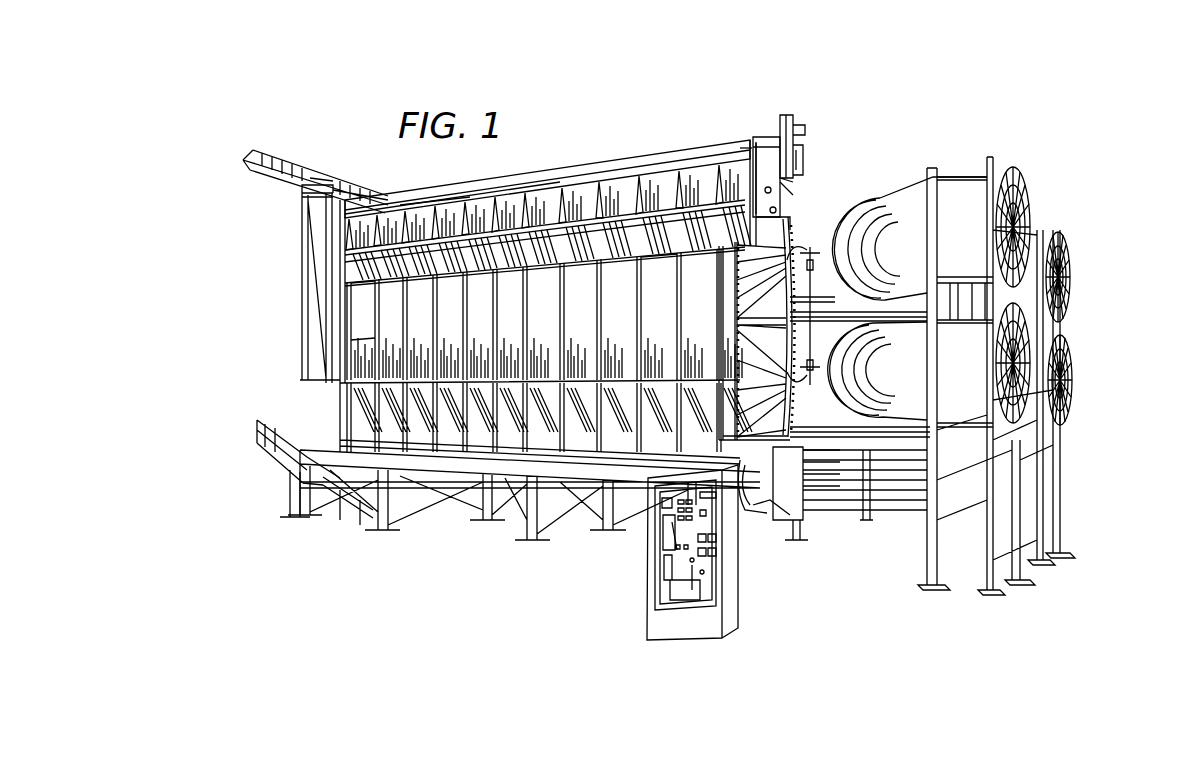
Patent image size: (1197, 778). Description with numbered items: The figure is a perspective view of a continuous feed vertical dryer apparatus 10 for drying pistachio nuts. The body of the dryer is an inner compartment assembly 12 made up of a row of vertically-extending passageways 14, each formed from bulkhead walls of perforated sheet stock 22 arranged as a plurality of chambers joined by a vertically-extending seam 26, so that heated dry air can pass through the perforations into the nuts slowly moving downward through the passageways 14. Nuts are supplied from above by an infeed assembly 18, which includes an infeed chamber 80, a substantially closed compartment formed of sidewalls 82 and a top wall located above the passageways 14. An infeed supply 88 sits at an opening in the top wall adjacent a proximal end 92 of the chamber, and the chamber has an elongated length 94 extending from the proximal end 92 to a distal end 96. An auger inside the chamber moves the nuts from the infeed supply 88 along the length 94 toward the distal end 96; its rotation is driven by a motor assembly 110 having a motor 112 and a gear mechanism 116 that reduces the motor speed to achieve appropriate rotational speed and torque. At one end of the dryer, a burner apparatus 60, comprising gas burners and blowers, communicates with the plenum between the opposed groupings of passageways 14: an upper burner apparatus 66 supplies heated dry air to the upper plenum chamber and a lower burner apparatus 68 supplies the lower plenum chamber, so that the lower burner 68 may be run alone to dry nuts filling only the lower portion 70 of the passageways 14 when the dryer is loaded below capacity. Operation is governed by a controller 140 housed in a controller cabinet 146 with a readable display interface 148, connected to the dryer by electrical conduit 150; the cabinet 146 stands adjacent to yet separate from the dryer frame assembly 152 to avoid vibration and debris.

The continuous feed vertical dryer apparatus 10 is at (296, 582).
The inner compartment assembly 12 is at (333, 362).
The vertically-extending passageway 14 is at (340, 268).
The infeed assembly 18 is at (805, 147).
The perforated sheet stock 22 is at (540, 350).
The vertically-extending seam 26 is at (343, 332).
The burner apparatus 60 is at (965, 148).
The upper burner apparatus 66 is at (883, 227).
The lower burner apparatus 68 is at (963, 353).
The lower portion of the vertically-extending passageways 70 is at (710, 420).
The infeed chamber 80 is at (725, 135).
The sidewalls 82 is at (462, 212).
The infeed supply 88 is at (382, 190).
The proximal end of the infeed chamber 92 is at (340, 220).
The elongated length of the infeed chamber 94 is at (640, 152).
The distal end of the infeed chamber 96 is at (764, 110).
The motor assembly 110 is at (810, 116).
The motor 112 is at (760, 140).
The gear mechanism 116 is at (790, 162).
The controller 140 is at (672, 522).
The controller cabinet 146 is at (730, 617).
The readable display interface 148 is at (700, 562).
The electrical conduit 150 is at (752, 512).
The dryer frame assembly 152 is at (437, 465).